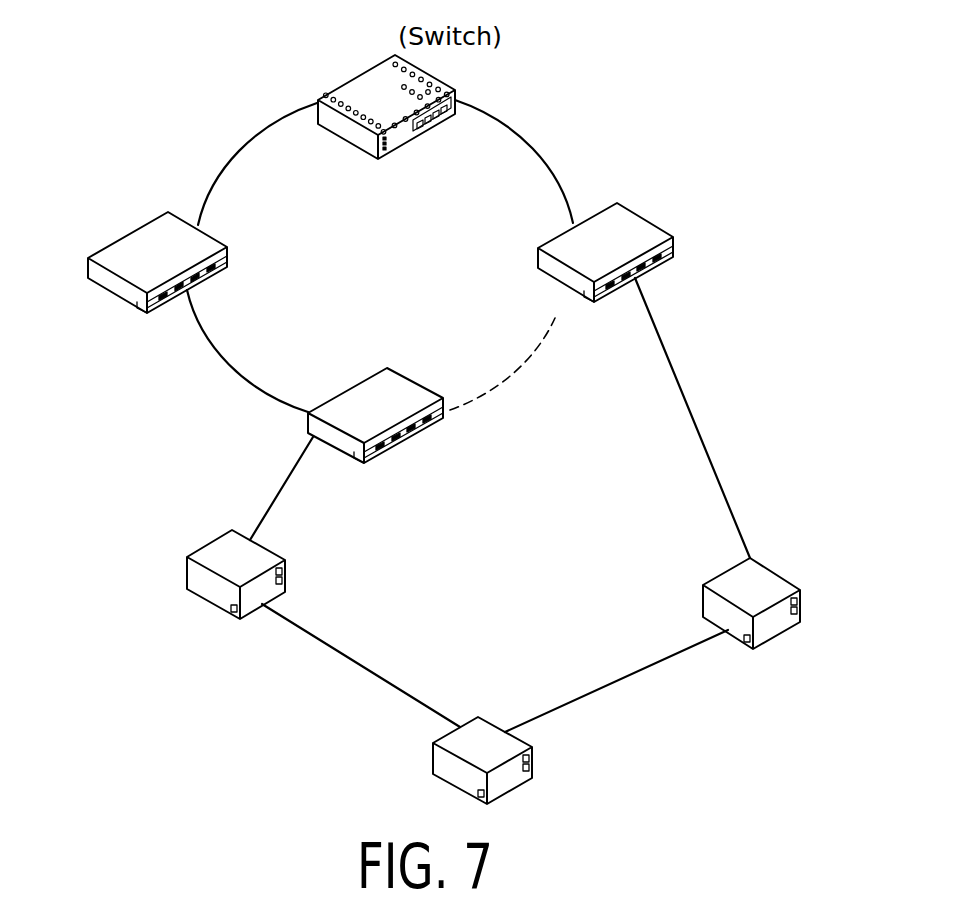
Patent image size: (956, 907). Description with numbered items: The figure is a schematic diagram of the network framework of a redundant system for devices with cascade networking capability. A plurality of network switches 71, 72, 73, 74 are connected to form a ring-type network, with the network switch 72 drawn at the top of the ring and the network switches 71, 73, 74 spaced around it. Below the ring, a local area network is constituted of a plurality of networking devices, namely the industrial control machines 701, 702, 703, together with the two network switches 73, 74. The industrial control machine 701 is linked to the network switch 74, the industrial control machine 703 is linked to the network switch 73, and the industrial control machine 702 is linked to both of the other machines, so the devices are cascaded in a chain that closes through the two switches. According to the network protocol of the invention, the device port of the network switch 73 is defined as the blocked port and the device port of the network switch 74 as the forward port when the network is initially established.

The network switch 71 is at (148, 235).
The network switch 72 is at (368, 80).
The network switch 73 is at (640, 212).
The network switch 74 is at (365, 397).
The industrial control machine 701 is at (263, 553).
The industrial control machine 702 is at (488, 723).
The industrial control machine 703 is at (732, 580).